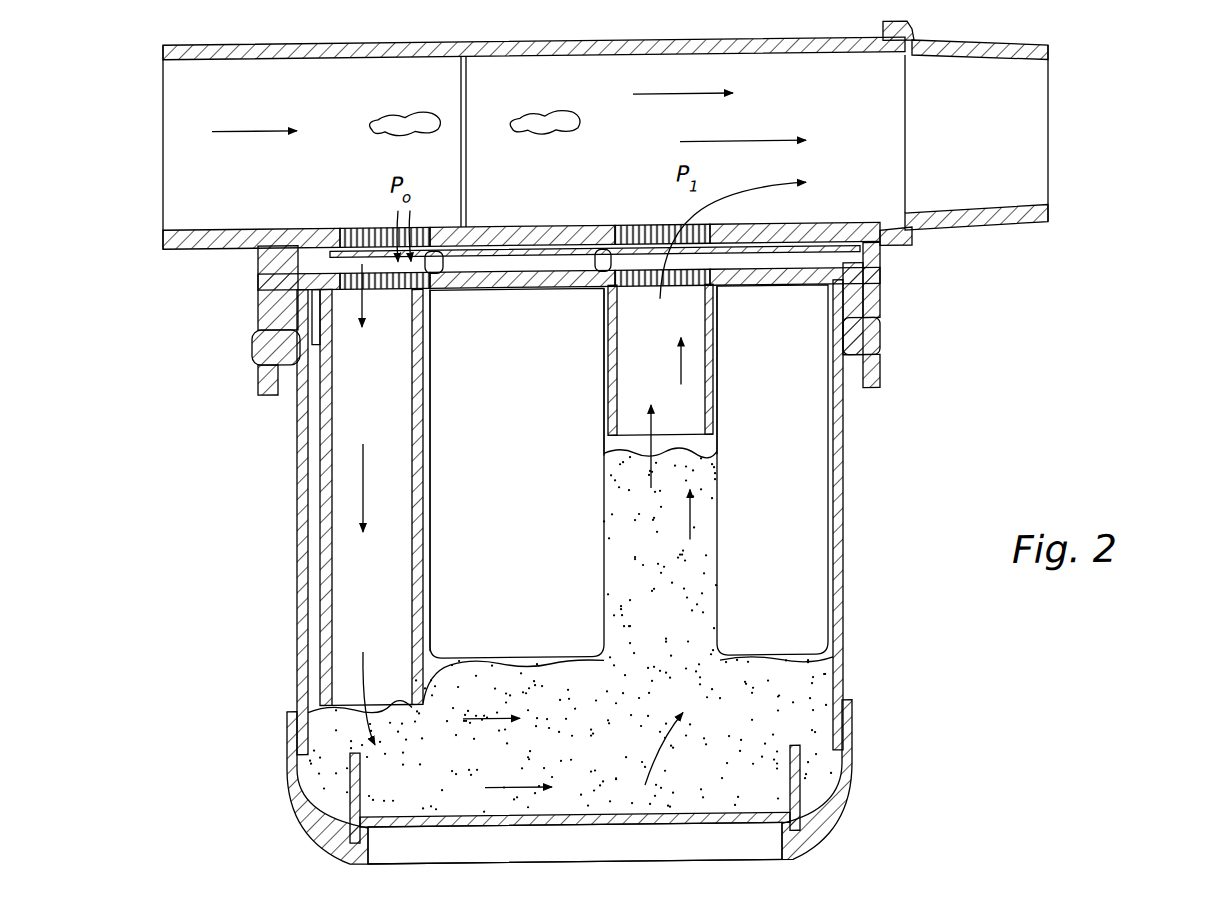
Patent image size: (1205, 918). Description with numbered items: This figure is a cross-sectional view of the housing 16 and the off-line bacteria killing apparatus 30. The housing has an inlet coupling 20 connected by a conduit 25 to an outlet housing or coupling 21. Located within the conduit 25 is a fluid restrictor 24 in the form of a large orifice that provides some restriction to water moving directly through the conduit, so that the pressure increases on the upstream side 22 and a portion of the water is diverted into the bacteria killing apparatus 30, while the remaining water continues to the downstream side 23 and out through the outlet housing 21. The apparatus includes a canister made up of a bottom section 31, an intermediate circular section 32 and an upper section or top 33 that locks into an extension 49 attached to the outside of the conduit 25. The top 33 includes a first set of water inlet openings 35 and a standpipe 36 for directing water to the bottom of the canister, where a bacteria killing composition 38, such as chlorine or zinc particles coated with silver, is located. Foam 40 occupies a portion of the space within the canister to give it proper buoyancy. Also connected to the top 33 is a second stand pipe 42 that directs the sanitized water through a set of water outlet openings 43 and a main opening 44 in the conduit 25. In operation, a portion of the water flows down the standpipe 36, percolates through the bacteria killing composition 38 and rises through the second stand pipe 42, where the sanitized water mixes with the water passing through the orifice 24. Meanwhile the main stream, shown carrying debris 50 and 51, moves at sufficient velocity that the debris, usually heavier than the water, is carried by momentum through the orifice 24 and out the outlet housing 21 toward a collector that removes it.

The housing 16 is at (602, 41).
The inlet coupling 20 is at (213, 42).
The outlet housing 21 is at (1003, 49).
The upstream side 22 is at (262, 168).
The outlet air stream 23 is at (756, 192).
The fluid restrictor 24 is at (467, 97).
The conduit 25 is at (405, 42).
The bacteria killing apparatus 30 is at (575, 572).
The bottom section 31 is at (840, 811).
The intermediate circular section 32 is at (300, 519).
The upper section 33 is at (265, 341).
The water inlet openings 35 is at (348, 303).
The standpipe 36 is at (323, 609).
The bacteria killing composition 38 is at (570, 629).
The foam 40 is at (620, 495).
The second stand pipe 42 is at (620, 346).
The water outlet openings 43 is at (671, 287).
The main opening 44 is at (352, 227).
The extension 49 is at (880, 301).
The debris 50 is at (415, 116).
The debris 51 is at (532, 138).